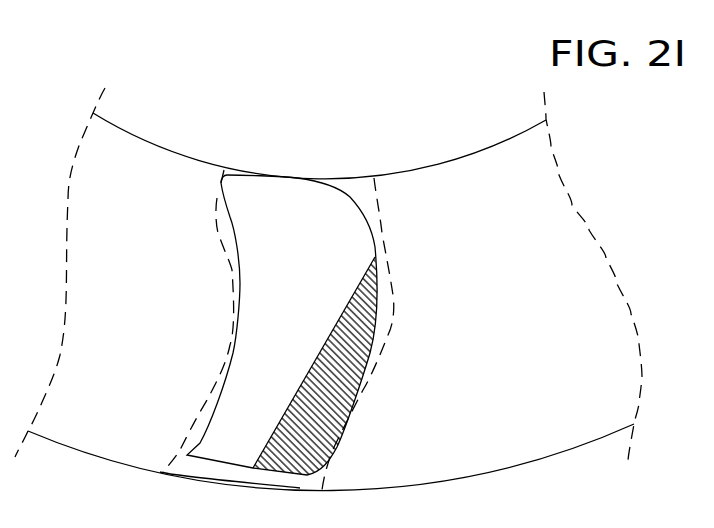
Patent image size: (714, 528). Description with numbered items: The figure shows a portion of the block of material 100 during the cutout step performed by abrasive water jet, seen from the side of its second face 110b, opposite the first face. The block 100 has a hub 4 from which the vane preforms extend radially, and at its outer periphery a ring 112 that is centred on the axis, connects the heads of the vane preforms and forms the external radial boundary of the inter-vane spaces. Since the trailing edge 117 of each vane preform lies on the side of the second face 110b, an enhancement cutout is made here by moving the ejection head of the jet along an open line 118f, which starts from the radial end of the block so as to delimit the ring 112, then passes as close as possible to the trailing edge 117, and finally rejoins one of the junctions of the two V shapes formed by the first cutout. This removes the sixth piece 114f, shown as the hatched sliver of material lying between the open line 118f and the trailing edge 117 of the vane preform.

The block of material 100 is at (472, 91).
The hub 4 is at (207, 141).
The second face 110b is at (312, 153).
The trailing edge 117 is at (383, 244).
The open line 118f is at (378, 326).
The sixth piece 114f is at (361, 365).
The ring 112 is at (198, 471).